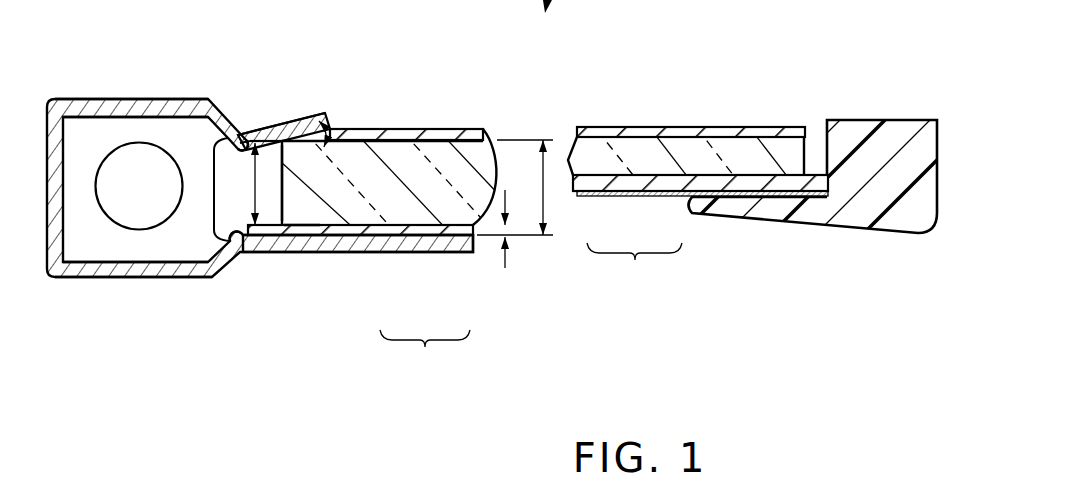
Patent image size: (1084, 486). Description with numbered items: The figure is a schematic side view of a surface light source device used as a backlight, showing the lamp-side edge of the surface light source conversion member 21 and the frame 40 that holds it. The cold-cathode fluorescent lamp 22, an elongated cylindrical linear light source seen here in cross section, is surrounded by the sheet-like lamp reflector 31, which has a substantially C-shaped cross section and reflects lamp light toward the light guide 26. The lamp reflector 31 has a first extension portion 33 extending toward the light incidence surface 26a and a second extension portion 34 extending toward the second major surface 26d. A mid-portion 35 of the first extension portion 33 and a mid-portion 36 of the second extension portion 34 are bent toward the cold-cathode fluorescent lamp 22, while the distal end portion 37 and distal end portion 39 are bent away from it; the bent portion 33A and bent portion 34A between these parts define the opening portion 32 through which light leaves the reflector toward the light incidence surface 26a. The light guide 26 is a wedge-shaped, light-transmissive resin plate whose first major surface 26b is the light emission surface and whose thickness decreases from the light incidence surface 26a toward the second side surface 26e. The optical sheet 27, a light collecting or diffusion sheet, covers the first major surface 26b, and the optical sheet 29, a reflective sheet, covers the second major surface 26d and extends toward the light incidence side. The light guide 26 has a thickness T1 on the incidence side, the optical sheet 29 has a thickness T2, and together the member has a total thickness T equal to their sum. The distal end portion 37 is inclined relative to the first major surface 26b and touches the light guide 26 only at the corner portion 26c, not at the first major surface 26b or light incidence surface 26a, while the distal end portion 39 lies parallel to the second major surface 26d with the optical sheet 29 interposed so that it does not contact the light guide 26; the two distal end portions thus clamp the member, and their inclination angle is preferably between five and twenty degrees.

The surface light source conversion member 21 is at (531, 312).
The cold-cathode fluorescent lamp 22 is at (108, 218).
The light guide 26 is at (442, 212).
The first side surface 26a is at (292, 228).
The first major surface 26b is at (423, 137).
The corner portion 26c is at (279, 141).
The second major surface 26d is at (284, 200).
The second side surface 26e is at (804, 152).
The optical sheet 27 is at (638, 134).
The optical sheet 29 is at (387, 228).
The lamp reflector 31 is at (91, 95).
The opening portion 32 is at (200, 178).
The first extension portion 33 is at (131, 99).
The bent portion 33A is at (247, 150).
The second extension portion 34 is at (154, 278).
The bent portion 34A is at (244, 242).
The mid-portion 35 is at (236, 146).
The mid-portion 36 is at (236, 242).
The distal end portion 37 is at (243, 141).
The distal end portion 39 is at (258, 234).
The frame 40 is at (924, 237).
The thickness T is at (515, 187).
The thickness T1 is at (241, 184).
The thickness T2 is at (508, 233).